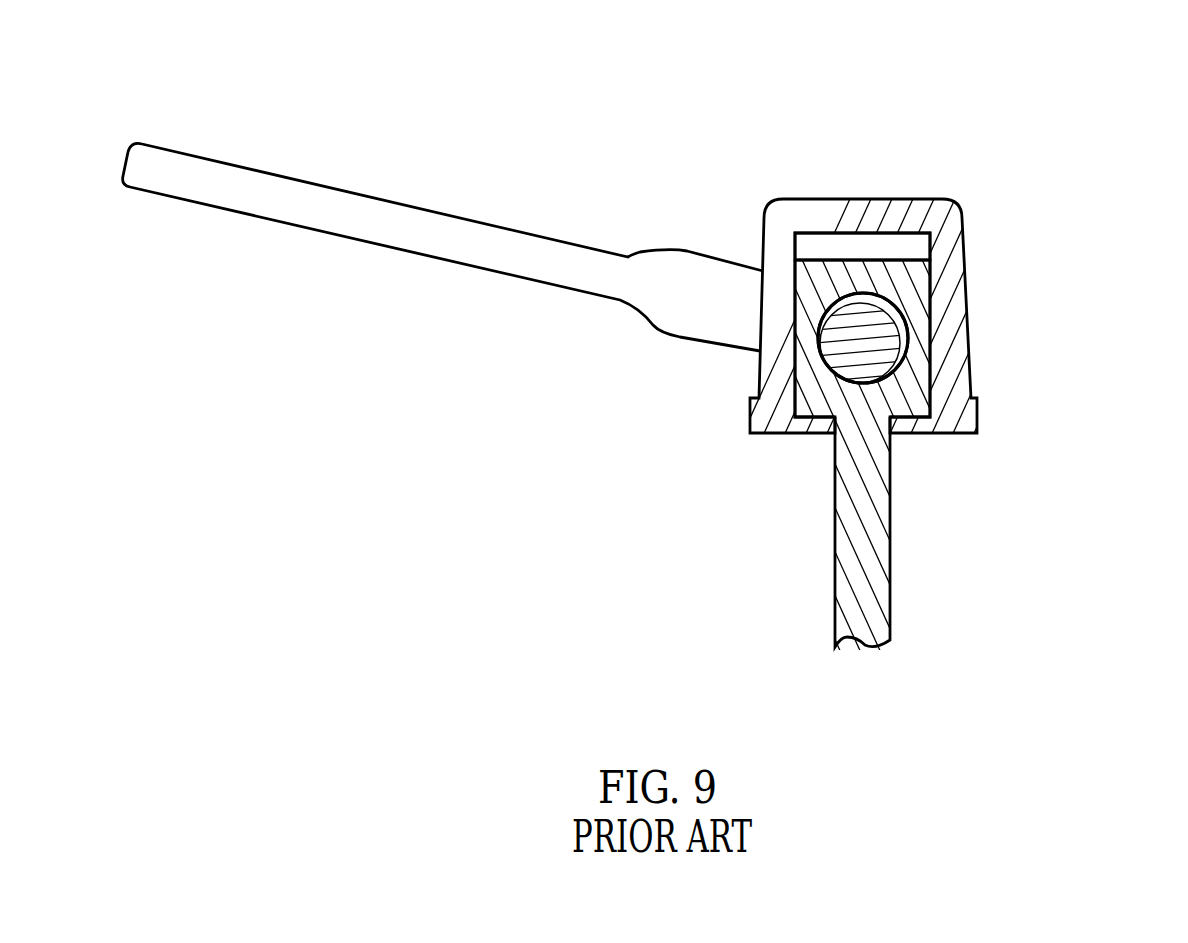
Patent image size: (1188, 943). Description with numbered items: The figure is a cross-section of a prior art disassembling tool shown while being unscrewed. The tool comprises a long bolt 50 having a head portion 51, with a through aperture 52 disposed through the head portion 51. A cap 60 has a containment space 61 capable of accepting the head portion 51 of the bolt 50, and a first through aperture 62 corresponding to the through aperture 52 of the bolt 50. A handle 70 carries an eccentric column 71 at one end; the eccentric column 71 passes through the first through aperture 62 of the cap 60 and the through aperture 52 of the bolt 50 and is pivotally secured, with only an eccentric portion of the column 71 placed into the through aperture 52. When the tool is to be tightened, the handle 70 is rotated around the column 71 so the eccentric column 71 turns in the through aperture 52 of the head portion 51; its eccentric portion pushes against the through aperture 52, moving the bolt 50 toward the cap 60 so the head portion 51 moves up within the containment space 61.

The long bolt 50 is at (851, 455).
The head portion 51 is at (905, 395).
The through aperture 52 is at (907, 341).
The cap 60 is at (964, 250).
The containment space 61 is at (848, 243).
The first through aperture 62 is at (1001, 338).
The handle 70 is at (458, 264).
The eccentric column 71 is at (842, 348).